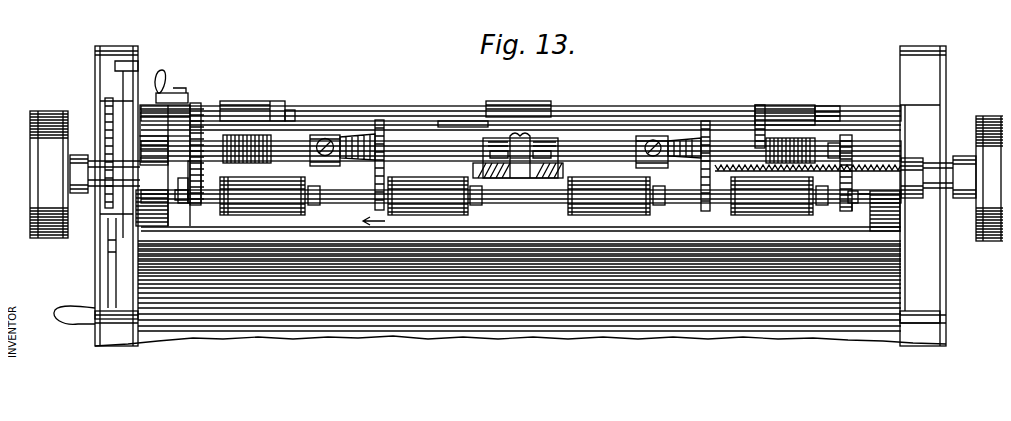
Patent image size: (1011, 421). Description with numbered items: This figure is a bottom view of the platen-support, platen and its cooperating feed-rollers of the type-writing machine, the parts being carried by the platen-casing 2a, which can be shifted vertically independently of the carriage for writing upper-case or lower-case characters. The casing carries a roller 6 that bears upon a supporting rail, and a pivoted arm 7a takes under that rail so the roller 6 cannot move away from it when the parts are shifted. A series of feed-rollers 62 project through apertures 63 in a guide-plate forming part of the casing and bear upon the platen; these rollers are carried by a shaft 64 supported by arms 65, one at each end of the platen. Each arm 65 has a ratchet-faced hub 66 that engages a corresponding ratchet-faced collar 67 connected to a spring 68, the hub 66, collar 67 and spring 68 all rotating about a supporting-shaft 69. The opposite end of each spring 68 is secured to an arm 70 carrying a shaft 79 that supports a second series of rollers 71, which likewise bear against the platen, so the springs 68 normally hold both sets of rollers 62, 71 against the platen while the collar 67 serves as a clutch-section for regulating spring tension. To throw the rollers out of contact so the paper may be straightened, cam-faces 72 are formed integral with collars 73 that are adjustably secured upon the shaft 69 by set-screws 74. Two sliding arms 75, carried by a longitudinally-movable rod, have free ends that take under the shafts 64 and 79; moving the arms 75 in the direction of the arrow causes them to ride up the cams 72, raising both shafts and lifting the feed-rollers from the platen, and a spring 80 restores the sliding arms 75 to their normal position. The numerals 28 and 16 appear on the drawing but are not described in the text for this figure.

The platen-casing 2a is at (87, 54).
The pawl bracket 28 is at (155, 66).
The ratchet-faced hub 66 is at (190, 130).
The ratchet-faced collar 67 is at (233, 126).
The arm 70 is at (268, 100).
The spring 68 is at (283, 106).
The set-screw 74 is at (324, 133).
The cam-face 72 is at (372, 110).
The sliding arm 75 is at (382, 128).
The supporting-shaft 69 is at (418, 134).
The bar 16 is at (456, 114).
The rollers 71 is at (540, 96).
The shaft 79 is at (600, 98).
The collar 73 is at (636, 127).
The aperture 63 is at (180, 184).
The feed-rollers 62 is at (262, 190).
The shaft 64 is at (467, 194).
The pivoted arm 7a is at (510, 152).
The roller 6 is at (552, 159).
The spring 80 is at (824, 163).
The arm 65 is at (841, 194).